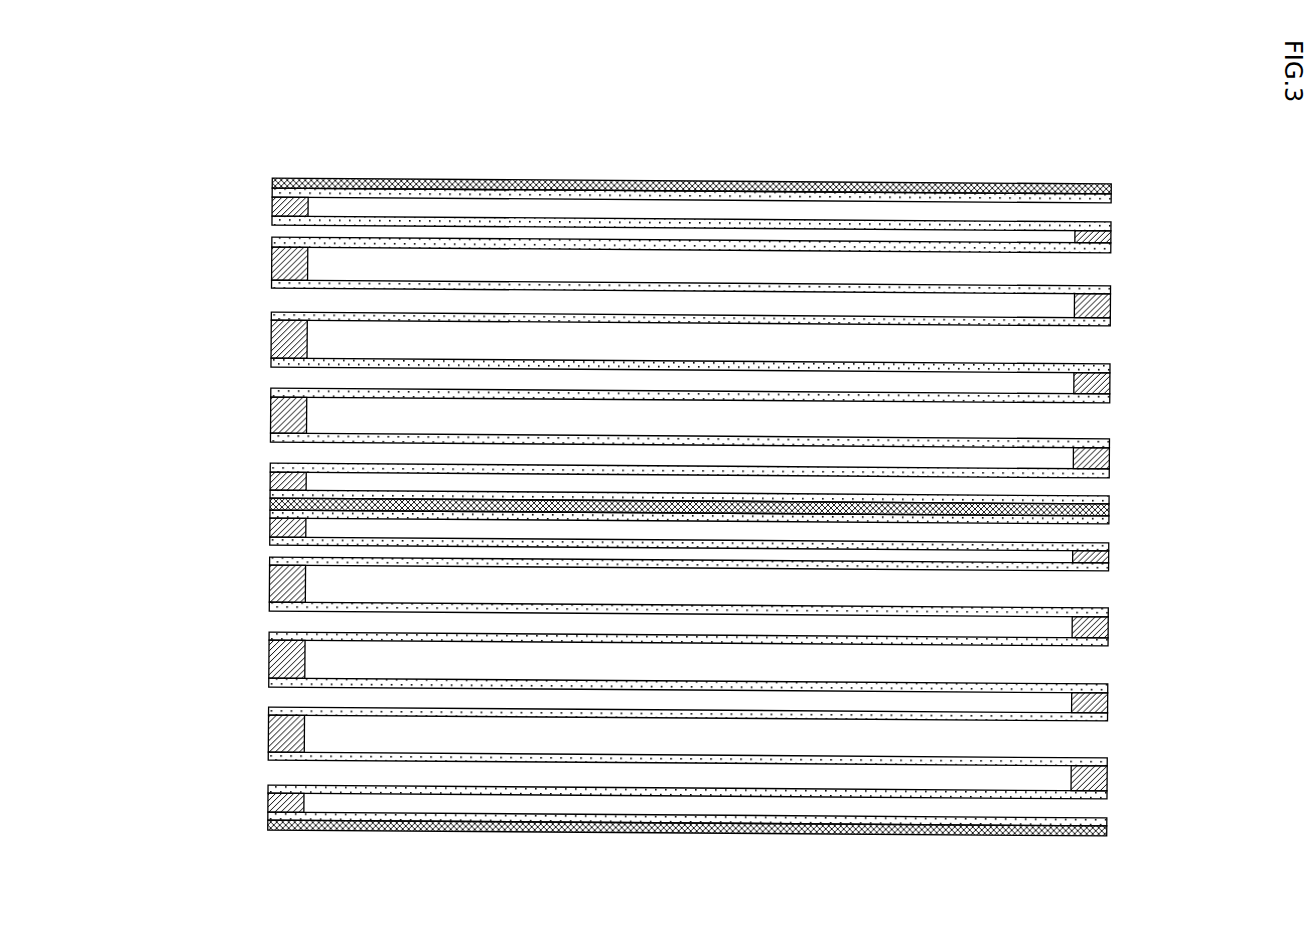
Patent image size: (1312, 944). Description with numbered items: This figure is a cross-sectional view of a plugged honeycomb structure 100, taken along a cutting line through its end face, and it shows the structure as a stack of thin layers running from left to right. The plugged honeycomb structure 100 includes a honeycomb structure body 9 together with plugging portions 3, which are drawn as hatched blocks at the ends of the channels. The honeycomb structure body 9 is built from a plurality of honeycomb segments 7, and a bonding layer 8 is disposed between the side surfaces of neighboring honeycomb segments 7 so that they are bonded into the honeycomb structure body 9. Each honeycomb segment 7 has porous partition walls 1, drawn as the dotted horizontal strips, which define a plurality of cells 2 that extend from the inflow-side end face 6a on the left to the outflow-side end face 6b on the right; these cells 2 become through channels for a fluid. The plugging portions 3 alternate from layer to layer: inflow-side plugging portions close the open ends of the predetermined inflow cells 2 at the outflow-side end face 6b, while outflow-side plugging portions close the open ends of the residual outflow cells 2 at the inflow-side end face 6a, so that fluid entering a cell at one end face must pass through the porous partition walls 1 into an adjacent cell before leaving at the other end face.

The plugged honeycomb structure 100 is at (1187, 84).
The porous partition walls 1 is at (848, 226).
The cells 2 is at (296, 298).
The plugging portions 3 is at (285, 340).
The inflow-side end face 6a is at (240, 558).
The outflow-side end face 6b is at (1124, 574).
The honeycomb segments 7 is at (1110, 385).
The bonding layer 8 is at (1107, 508).
The honeycomb structure body 9 is at (1032, 174).